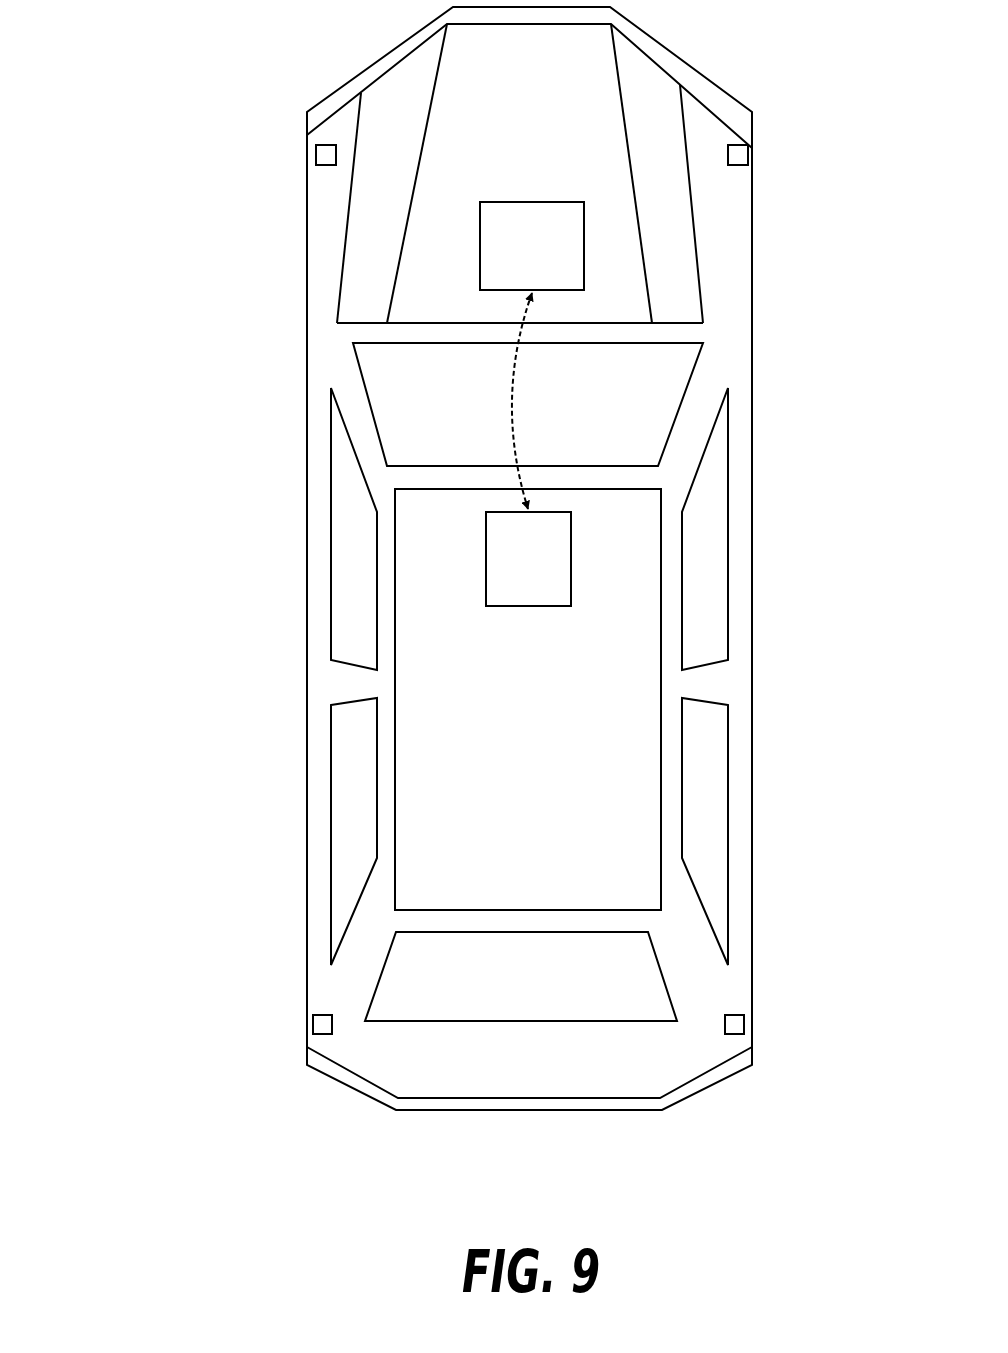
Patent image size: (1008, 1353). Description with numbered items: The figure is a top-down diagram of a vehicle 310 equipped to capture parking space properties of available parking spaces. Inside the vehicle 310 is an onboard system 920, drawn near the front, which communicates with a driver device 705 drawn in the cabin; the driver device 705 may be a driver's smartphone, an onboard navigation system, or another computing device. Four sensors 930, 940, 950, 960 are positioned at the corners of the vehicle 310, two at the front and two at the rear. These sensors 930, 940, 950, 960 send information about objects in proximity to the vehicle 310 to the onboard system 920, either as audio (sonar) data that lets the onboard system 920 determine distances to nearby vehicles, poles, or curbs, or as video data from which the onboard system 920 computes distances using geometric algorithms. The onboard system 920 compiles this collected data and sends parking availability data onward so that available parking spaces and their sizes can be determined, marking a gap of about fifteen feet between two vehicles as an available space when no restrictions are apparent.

The vehicle 310 is at (404, 558).
The onboard system 920 is at (532, 246).
The driver device 705 is at (528, 559).
The sensor 930 is at (268, 139).
The sensor 940 is at (798, 135).
The sensor 950 is at (263, 1005).
The sensor 960 is at (794, 1002).